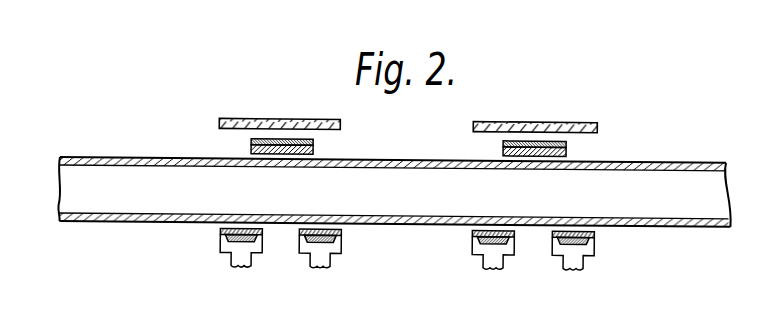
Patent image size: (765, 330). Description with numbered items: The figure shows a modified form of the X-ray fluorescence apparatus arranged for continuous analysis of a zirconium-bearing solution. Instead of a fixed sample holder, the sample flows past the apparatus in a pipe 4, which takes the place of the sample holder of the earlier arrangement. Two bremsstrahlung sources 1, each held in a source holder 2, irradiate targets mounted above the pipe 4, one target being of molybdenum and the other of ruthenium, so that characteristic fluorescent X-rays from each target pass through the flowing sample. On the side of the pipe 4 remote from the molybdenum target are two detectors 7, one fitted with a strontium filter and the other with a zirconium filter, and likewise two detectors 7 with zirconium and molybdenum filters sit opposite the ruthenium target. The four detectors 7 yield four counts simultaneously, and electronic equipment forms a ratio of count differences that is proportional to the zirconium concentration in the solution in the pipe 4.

The bremsstrahlung source 1 is at (268, 141).
The source holder 2 is at (313, 149).
The pipe 4 is at (128, 157).
The detector 7 is at (313, 266).